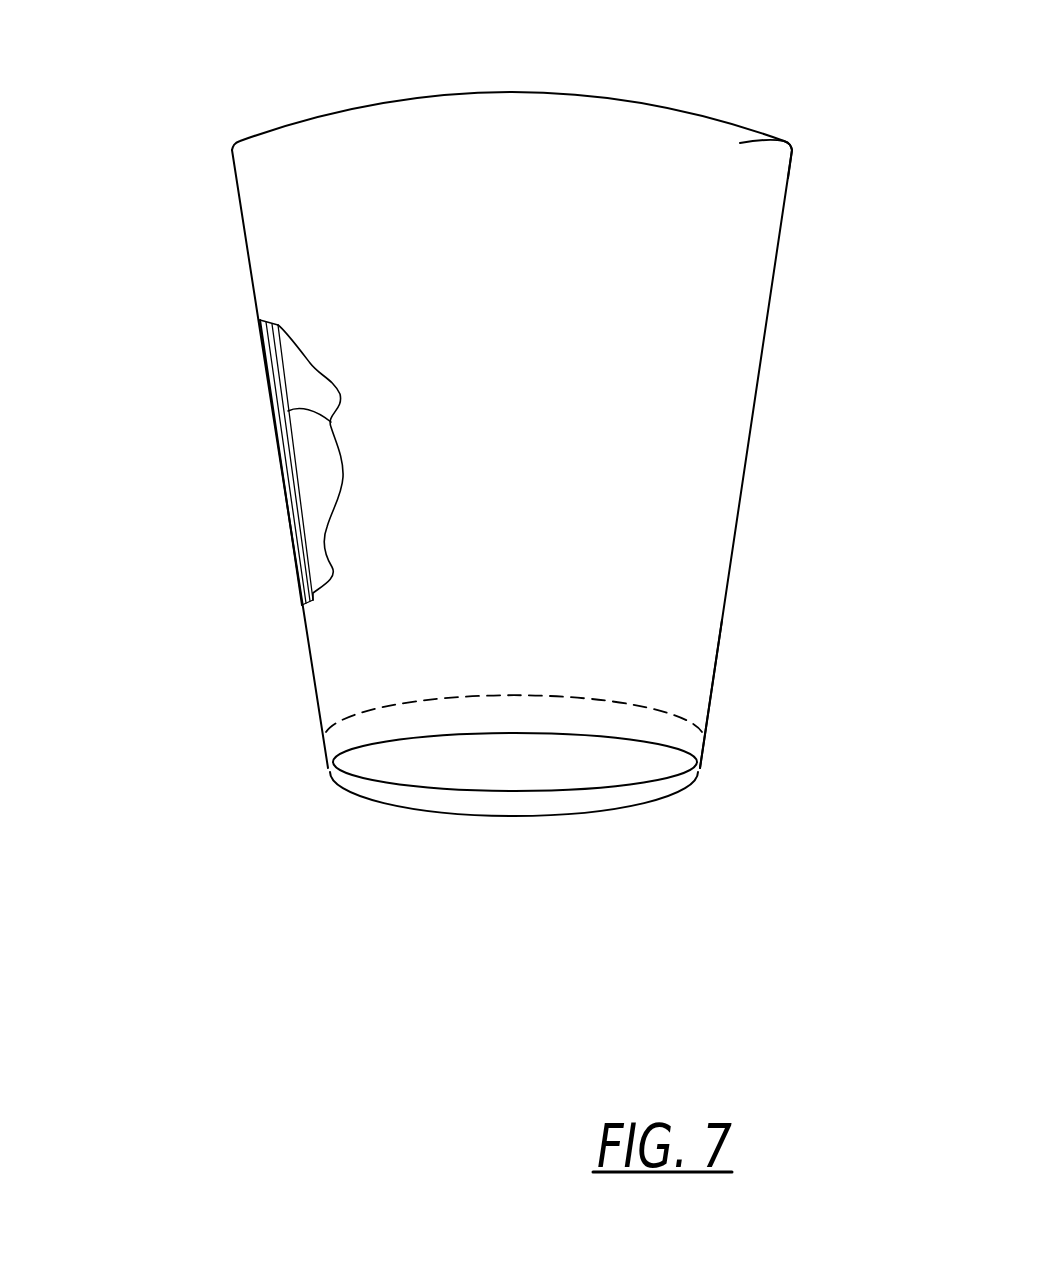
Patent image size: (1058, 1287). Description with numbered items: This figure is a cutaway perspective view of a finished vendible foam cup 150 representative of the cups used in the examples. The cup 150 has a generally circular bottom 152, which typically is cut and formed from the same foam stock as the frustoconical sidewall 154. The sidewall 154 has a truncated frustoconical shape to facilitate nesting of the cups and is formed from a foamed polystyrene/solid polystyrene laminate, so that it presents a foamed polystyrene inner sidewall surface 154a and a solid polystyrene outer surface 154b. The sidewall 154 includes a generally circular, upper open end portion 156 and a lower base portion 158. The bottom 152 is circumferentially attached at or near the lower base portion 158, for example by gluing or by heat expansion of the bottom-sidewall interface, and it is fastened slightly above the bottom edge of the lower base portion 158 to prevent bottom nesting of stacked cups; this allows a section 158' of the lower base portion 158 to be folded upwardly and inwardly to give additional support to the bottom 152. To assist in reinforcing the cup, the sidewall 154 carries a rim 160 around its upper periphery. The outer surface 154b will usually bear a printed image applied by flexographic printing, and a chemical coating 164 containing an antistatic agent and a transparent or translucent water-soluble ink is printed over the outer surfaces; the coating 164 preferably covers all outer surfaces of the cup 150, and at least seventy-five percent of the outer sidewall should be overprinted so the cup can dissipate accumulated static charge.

The cup 150 is at (483, 462).
The bottom 152 is at (615, 757).
The frustoconical sidewall 154 is at (767, 318).
The inner sidewall surface 154a is at (331, 422).
The outer surface 154b is at (293, 344).
The upper open end portion 156 is at (808, 178).
The lower base portion 158 is at (775, 694).
The section of lower base portion 158' is at (514, 848).
The rim 160 is at (400, 101).
The chemical coating 164 is at (280, 483).